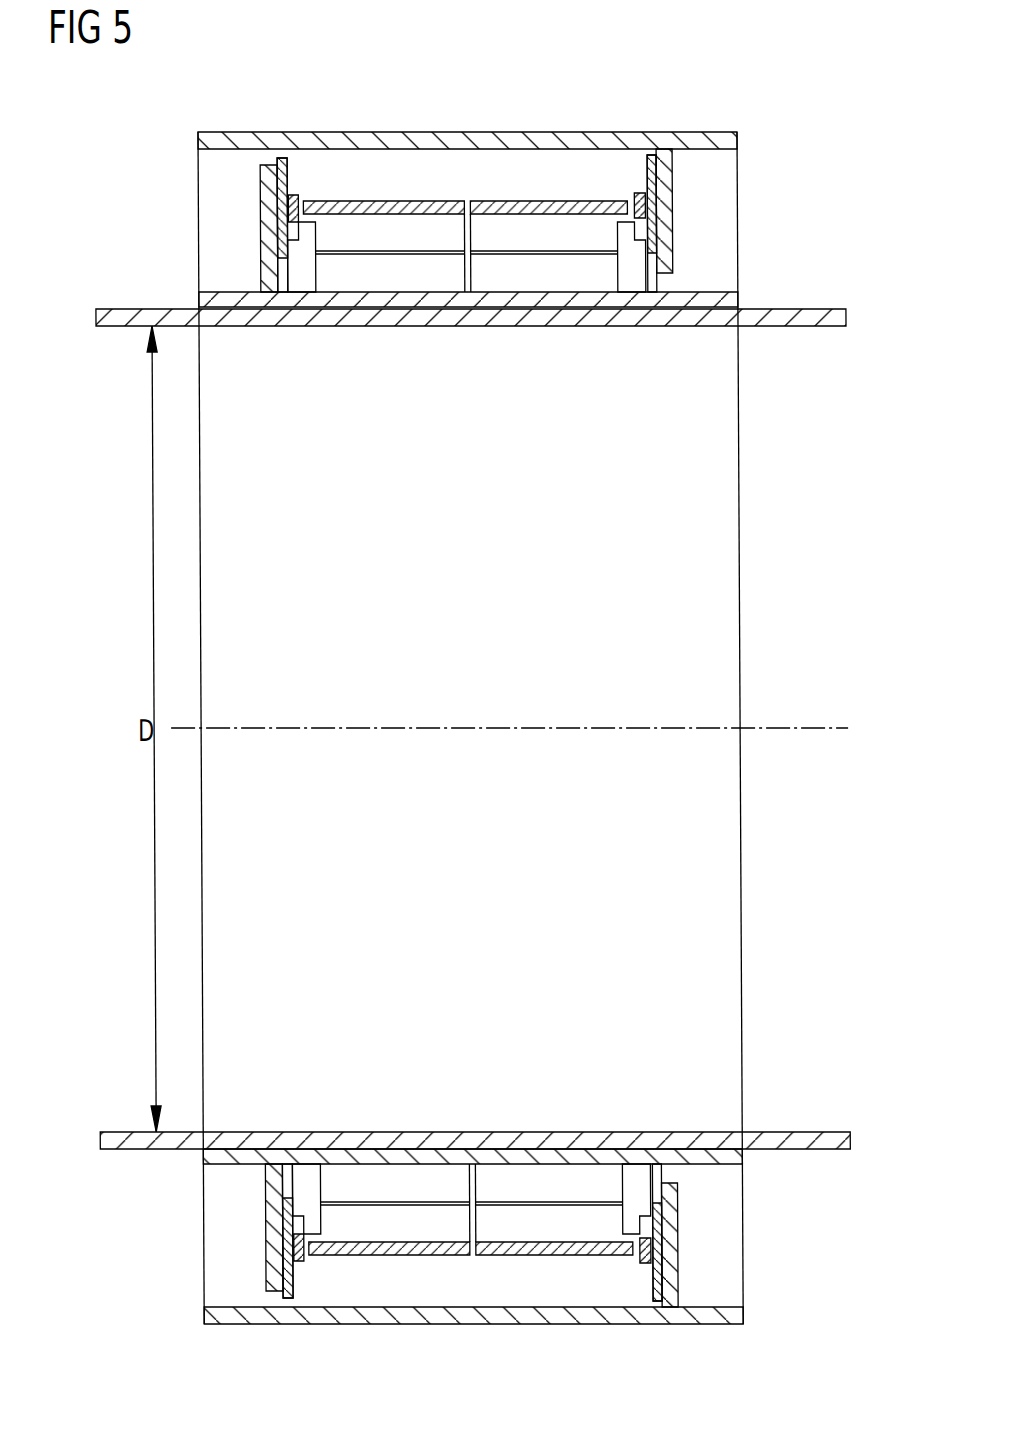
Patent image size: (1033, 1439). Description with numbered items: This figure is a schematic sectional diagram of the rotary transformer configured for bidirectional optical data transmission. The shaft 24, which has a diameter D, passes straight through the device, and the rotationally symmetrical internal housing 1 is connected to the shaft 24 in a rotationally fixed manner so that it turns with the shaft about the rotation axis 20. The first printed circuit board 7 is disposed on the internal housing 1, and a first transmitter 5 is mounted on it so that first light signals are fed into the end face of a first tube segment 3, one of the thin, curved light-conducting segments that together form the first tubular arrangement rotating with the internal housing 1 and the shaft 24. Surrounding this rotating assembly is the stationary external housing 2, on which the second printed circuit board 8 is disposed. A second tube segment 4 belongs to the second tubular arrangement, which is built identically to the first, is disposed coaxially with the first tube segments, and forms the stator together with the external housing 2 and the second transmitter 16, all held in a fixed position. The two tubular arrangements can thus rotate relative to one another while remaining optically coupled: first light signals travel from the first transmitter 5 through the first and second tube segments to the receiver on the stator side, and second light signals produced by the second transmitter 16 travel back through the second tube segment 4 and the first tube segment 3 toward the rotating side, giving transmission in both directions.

The internal housing 1 is at (728, 291).
The external housing 2 is at (727, 133).
The first tube segment 3 is at (440, 212).
The second tube segment 4 is at (500, 210).
The first transmitter 5 is at (290, 195).
The first printed circuit board 7 is at (272, 229).
The second printed circuit board 8 is at (656, 226).
The second transmitter 16 is at (644, 193).
The rotation axis 20 is at (797, 727).
The shaft 24 is at (826, 309).